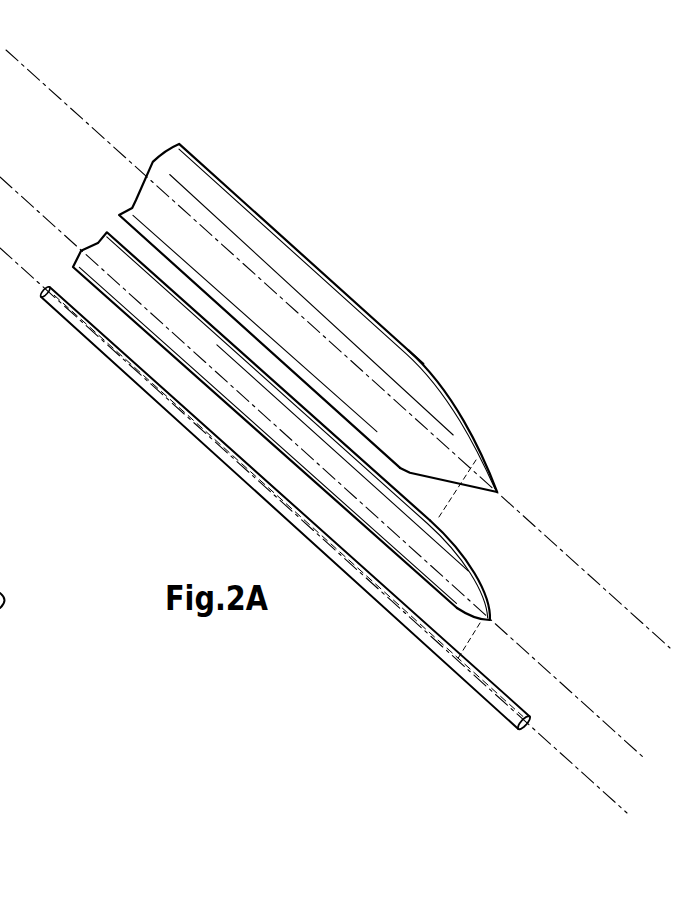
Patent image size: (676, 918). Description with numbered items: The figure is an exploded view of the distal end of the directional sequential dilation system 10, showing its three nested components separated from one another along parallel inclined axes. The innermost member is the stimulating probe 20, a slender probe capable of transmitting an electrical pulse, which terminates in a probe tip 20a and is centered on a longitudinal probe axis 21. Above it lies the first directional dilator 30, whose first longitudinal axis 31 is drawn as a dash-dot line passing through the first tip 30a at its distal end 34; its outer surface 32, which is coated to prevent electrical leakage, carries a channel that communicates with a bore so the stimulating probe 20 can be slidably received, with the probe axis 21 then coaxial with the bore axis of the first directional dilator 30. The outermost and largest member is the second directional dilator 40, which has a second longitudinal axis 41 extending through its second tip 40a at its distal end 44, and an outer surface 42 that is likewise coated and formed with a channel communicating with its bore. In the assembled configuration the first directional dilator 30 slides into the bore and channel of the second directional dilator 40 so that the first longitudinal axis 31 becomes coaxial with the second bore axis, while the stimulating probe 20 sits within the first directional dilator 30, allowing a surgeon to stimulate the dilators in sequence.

The directional sequential dilation system 10 is at (490, 296).
The stimulating probe 20 is at (487, 682).
The probe tip 20a is at (520, 730).
The longitudinal probe axis 21 is at (550, 753).
The first directional dilator 30 is at (455, 575).
The first tip 30a is at (493, 617).
The first longitudinal axis 31 is at (580, 697).
The outer surface 32 is at (222, 390).
The distal end 34 is at (455, 607).
The second directional dilator 40 is at (258, 250).
The second tip 40a is at (497, 492).
The second longitudinal axis 41 is at (587, 575).
The outer surface 42 is at (342, 323).
The distal end 44 is at (460, 442).